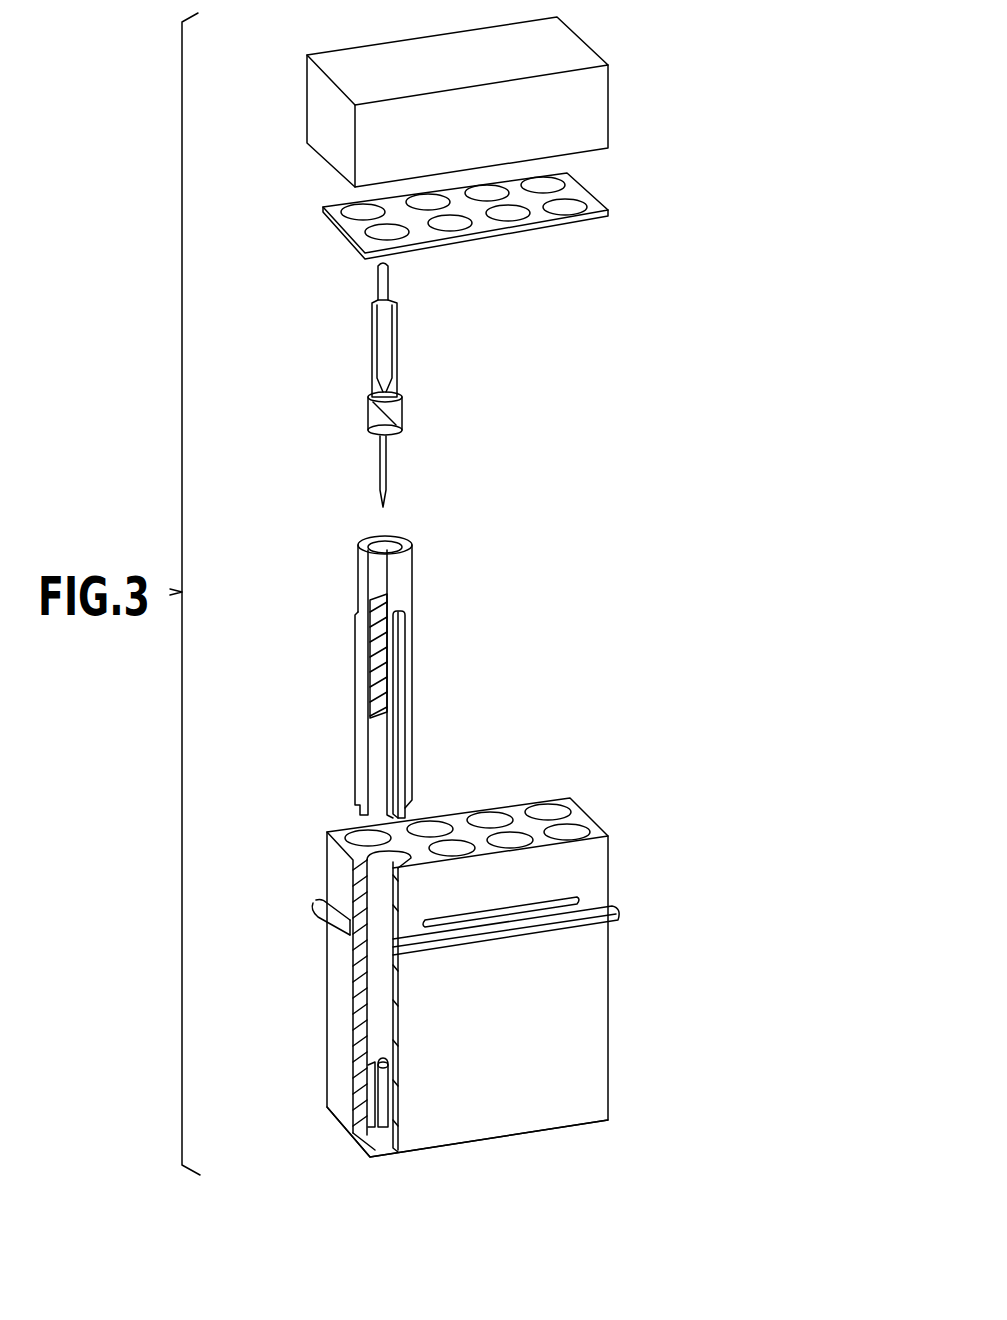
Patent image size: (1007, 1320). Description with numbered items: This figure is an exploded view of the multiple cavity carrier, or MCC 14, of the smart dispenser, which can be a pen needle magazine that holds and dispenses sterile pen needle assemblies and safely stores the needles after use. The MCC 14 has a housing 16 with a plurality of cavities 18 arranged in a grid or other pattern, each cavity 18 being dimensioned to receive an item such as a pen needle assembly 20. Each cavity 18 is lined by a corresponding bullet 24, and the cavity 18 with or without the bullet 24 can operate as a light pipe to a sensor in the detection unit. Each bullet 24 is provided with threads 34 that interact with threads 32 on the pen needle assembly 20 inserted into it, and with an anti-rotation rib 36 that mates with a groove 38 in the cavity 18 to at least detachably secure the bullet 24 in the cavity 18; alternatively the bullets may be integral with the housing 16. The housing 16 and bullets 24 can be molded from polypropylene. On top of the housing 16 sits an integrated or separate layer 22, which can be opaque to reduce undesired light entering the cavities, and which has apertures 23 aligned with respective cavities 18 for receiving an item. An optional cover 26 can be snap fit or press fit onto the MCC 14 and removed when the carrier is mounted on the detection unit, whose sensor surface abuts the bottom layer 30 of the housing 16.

The multiple cavity carrier 14 is at (675, 482).
The housing 16 is at (475, 971).
The cavity 18 is at (548, 810).
The pen needle assembly 20 is at (418, 385).
The layer 22 is at (476, 208).
The aperture 23 is at (362, 218).
The bullet 24 is at (433, 677).
The cover 26 is at (613, 97).
The bottom layer 30 is at (377, 1142).
The threads 32 is at (397, 426).
The threads 34 is at (380, 683).
The anti-rotation rib 36 is at (405, 773).
The groove 38 is at (373, 1080).